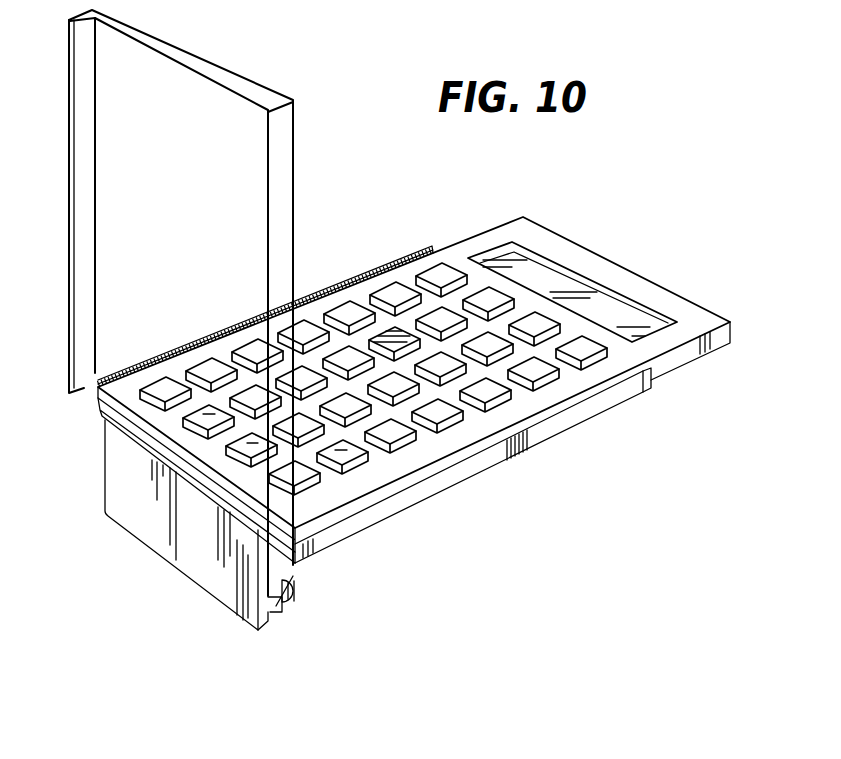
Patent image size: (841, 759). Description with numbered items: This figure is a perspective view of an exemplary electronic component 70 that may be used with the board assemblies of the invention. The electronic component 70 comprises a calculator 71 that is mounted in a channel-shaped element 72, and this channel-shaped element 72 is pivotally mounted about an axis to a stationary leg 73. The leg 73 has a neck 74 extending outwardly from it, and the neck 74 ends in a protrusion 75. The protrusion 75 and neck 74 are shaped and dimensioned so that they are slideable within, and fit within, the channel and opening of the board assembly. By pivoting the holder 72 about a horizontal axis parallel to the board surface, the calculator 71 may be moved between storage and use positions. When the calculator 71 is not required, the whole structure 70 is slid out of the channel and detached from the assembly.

The electronic component 70 is at (586, 202).
The calculator 71 is at (661, 341).
The channel-shaped element 72 is at (546, 428).
The stationary leg 73 is at (202, 563).
The neck 74 is at (277, 602).
The protrusion 75 is at (303, 590).